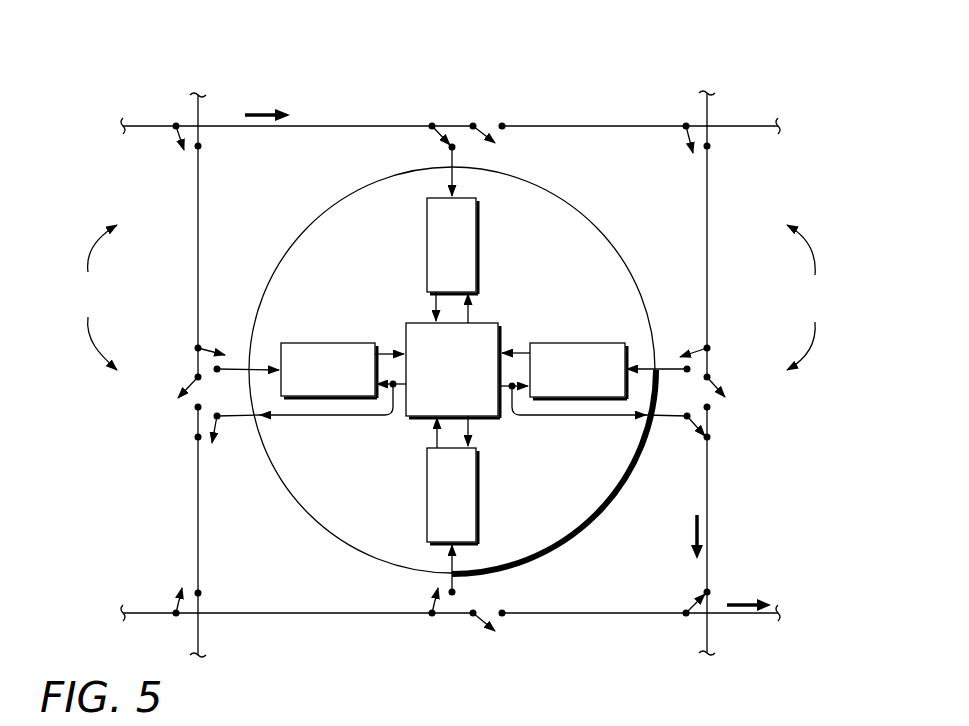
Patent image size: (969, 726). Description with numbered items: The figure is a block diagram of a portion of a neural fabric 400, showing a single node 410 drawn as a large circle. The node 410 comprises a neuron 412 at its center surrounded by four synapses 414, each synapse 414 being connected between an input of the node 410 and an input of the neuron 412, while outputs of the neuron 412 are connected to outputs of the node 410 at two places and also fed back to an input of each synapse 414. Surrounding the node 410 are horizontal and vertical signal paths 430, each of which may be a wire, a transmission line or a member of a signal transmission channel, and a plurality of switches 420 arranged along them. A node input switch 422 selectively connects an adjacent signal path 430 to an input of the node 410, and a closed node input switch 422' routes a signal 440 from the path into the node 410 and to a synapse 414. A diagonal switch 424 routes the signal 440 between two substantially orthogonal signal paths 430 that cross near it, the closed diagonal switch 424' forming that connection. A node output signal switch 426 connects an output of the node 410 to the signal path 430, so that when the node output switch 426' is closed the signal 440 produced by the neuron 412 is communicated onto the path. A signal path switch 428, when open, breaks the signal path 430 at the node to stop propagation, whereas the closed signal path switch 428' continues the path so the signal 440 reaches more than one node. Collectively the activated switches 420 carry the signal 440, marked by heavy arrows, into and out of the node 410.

The neural fabric 400 is at (748, 83).
The node 410 is at (312, 222).
The neuron 412 is at (485, 408).
The synapse 414 is at (427, 244).
The plurality of switches 420 is at (455, 297).
The node input switch 422 is at (453, 473).
The closed node input switch 422' is at (381, 110).
The diagonal switch 424 is at (384, 369).
The closed diagonal switch 424' is at (641, 587).
The node output signal switch 426 is at (178, 470).
The closed node output switch 426' is at (732, 470).
The signal path switch 428 is at (456, 530).
The closed signal path switch 428' is at (534, 109).
The signal path 430 is at (198, 108).
The signal 440 is at (262, 110).